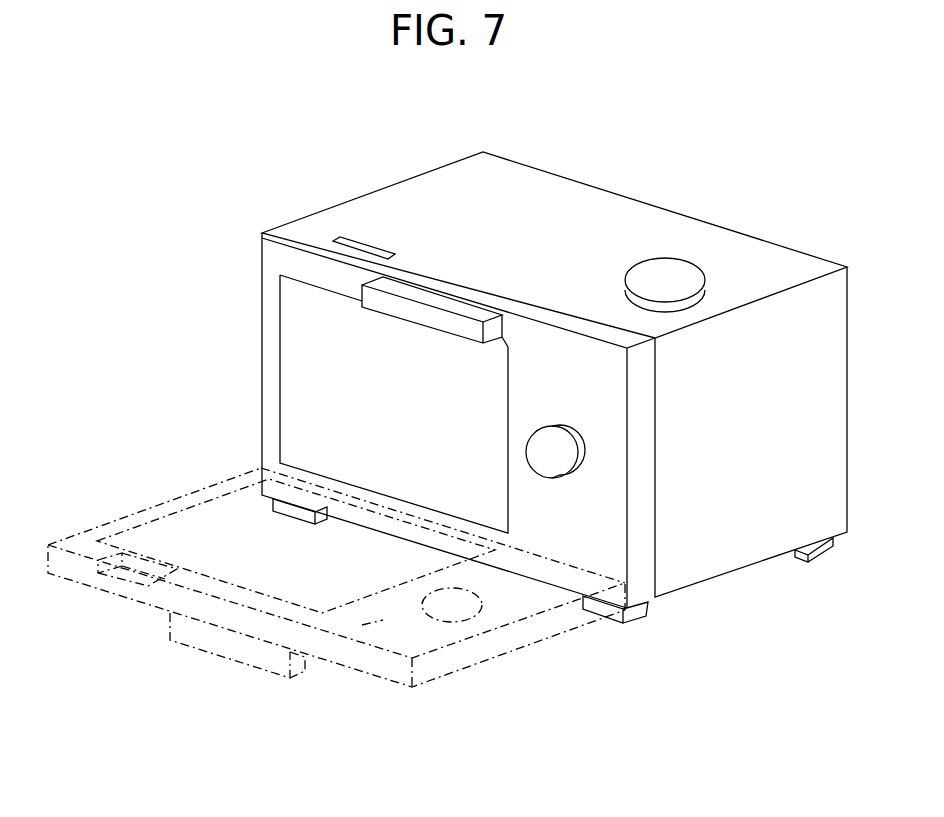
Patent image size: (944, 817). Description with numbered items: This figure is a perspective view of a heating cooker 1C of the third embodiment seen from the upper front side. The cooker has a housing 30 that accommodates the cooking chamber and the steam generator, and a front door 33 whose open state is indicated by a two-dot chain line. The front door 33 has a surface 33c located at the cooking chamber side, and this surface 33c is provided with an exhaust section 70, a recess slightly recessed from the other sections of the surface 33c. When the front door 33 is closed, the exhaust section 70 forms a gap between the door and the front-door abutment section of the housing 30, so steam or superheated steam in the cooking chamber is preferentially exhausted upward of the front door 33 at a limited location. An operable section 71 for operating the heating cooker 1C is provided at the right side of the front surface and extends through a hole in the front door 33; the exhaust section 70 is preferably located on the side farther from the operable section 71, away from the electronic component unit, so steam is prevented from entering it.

The heating cooker 1C is at (800, 153).
The housing 30 is at (414, 180).
The front door 33 is at (463, 655).
The surface 33c is at (387, 622).
The exhaust section 70 is at (359, 242).
The operable section 71 is at (552, 456).